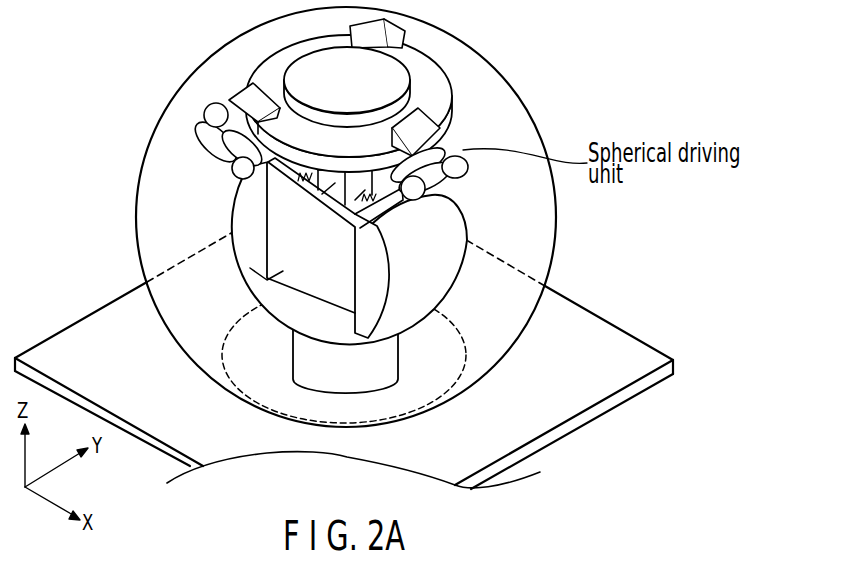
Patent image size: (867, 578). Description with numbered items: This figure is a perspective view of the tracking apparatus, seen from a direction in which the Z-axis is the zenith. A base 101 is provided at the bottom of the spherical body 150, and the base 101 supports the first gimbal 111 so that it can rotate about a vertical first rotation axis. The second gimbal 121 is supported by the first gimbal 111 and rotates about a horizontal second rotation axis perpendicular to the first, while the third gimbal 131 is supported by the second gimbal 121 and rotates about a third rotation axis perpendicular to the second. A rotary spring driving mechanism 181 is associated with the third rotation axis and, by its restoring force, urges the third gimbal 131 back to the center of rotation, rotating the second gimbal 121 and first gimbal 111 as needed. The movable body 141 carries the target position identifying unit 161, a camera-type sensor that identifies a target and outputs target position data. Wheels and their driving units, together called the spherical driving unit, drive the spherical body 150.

The base 101 is at (503, 400).
The first gimbal 111 is at (448, 230).
The second gimbal 121 is at (283, 247).
The third gimbal 131 is at (317, 204).
The movable body 141 is at (433, 97).
The spherical body 150 is at (433, 20).
The target position identifying unit 161 is at (390, 80).
The rotary spring driving mechanism 181 is at (300, 180).